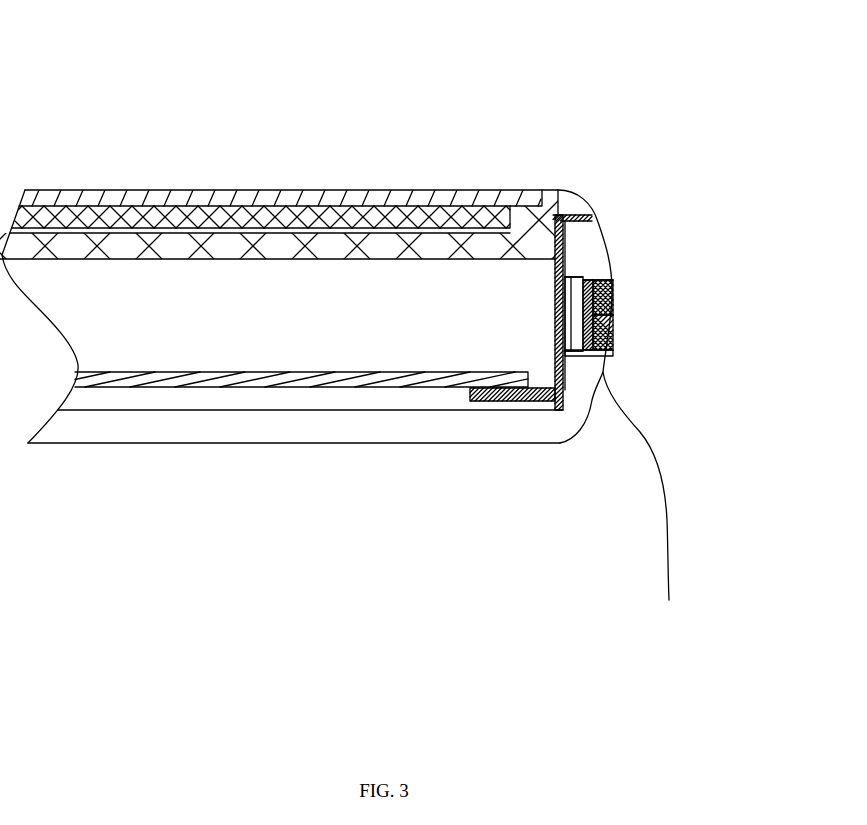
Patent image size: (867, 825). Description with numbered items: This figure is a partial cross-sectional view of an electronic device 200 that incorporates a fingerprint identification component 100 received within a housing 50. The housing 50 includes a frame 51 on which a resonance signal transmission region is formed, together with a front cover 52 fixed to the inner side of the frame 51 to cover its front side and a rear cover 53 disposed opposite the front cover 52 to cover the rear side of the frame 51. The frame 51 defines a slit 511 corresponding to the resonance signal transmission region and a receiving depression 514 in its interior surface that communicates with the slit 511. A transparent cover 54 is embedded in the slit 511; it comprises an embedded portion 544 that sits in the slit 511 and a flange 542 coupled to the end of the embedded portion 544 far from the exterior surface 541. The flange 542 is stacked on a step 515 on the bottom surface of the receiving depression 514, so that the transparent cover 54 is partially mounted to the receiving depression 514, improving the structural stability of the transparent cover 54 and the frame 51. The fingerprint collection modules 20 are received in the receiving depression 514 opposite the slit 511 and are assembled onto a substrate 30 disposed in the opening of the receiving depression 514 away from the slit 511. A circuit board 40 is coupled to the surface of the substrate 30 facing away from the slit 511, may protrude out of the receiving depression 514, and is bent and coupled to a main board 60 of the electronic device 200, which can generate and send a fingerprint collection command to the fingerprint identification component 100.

The electronic device 200 is at (500, 112).
The fingerprint collection modules 20 is at (563, 305).
The substrate 30 is at (573, 278).
The circuit board 40 is at (532, 398).
The housing 50 is at (667, 630).
The frame 51 is at (616, 407).
The front cover 52 is at (160, 258).
The rear cover 53 is at (313, 430).
The transparent cover 54 is at (654, 330).
The main board 60 is at (304, 380).
The fingerprint identification component 100 is at (579, 362).
The slit 511 is at (606, 290).
The receiving depression 514 is at (563, 343).
The step 515 is at (598, 282).
The exterior surface 541 is at (613, 306).
The flange 542 is at (613, 350).
The embedded portion 544 is at (613, 322).